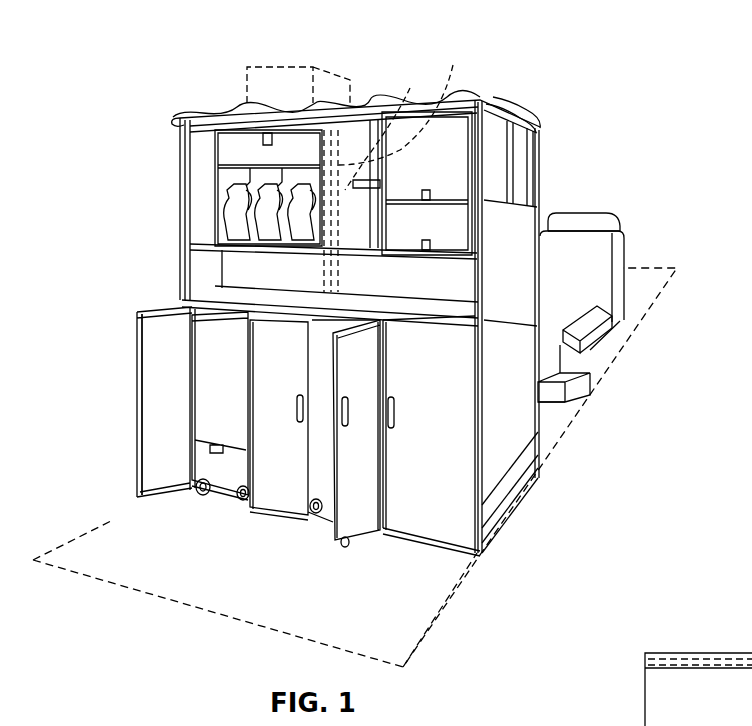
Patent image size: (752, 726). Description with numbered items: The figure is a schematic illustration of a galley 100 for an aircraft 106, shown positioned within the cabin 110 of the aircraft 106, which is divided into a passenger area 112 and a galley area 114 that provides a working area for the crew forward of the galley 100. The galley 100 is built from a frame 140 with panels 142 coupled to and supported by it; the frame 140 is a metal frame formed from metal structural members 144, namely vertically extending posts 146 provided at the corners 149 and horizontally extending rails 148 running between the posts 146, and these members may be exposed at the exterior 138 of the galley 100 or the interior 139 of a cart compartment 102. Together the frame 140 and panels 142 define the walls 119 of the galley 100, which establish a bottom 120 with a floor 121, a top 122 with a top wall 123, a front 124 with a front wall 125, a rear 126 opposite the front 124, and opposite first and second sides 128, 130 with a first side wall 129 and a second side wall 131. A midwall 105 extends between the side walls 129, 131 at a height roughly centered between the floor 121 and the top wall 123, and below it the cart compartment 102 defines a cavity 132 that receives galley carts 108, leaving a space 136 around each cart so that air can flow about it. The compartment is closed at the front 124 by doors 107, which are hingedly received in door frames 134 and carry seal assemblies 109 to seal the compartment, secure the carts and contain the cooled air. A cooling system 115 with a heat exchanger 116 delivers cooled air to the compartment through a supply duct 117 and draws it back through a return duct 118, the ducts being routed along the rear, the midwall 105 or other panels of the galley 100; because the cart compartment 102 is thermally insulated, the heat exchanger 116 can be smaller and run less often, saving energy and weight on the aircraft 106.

The galley 100 is at (389, 52).
The cart compartment 102 is at (216, 496).
The midwall 105 is at (560, 395).
The aircraft 106 is at (80, 160).
The door 107 is at (160, 465).
The galley cart 108 is at (240, 497).
The seal assembly 109 is at (443, 550).
The cabin 110 is at (598, 166).
The passenger area 112 is at (677, 272).
The galley area 114 is at (457, 592).
The cooling system 115 is at (302, 45).
The heat exchanger 116 is at (295, 65).
The supply duct 117 is at (387, 127).
The return duct 118 is at (406, 103).
The walls 119 is at (507, 225).
The bottom 120 is at (508, 513).
The floor 121 is at (453, 550).
The top 122 is at (493, 97).
The top wall 123 is at (520, 113).
The front 124 is at (520, 485).
The front wall 125 is at (180, 186).
The rear 126 is at (488, 278).
The first side 128 is at (517, 440).
The first side wall 129 is at (600, 330).
The second side 130 is at (198, 265).
The second side wall 131 is at (195, 257).
The cavity 132 is at (195, 492).
The door frame 134 is at (190, 385).
The space 136 is at (185, 320).
The exterior 138 is at (507, 427).
The interior 139 is at (190, 440).
The frame 140 is at (176, 145).
The panel 142 is at (607, 215).
The metal structural member 144 is at (487, 535).
The post 146 is at (190, 307).
The rail 148 is at (190, 345).
The corner 149 is at (527, 262).